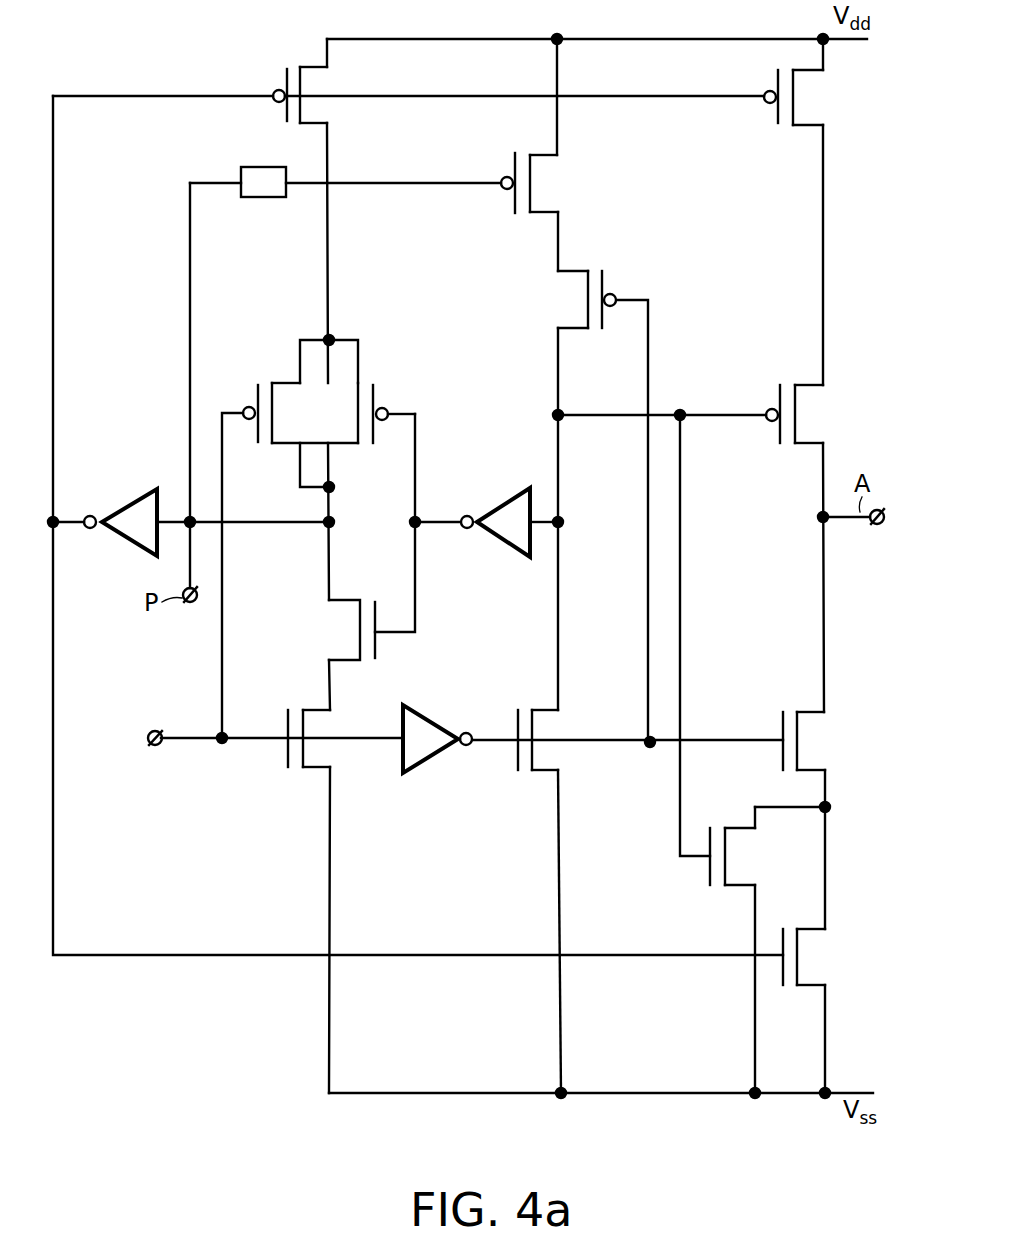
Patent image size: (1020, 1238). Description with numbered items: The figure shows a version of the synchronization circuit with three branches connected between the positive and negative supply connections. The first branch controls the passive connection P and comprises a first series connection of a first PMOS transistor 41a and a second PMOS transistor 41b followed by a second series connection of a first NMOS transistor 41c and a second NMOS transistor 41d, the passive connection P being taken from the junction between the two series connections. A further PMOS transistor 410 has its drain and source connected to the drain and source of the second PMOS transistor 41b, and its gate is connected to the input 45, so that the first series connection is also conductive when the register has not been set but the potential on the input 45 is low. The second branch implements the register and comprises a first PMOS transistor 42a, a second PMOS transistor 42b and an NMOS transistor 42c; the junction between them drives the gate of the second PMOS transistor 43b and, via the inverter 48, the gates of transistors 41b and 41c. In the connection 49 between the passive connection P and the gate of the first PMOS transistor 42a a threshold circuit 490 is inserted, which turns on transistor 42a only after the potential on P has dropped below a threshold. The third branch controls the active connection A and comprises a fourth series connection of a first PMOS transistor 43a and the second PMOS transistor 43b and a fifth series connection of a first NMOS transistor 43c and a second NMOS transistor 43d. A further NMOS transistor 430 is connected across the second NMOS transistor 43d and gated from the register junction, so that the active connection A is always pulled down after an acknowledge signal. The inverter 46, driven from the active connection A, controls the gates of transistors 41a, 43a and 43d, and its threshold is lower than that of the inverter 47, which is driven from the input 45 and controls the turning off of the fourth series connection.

The first PMOS transistor of the first series connection 41a is at (276, 88).
The second PMOS transistor of the first series connection 41b is at (353, 380).
The first NMOS transistor of the second series connection 41c is at (342, 632).
The second NMOS transistor of the second series connection 41d is at (303, 773).
The further PMOS transistor 410 is at (275, 380).
The first PMOS transistor of the third series connection 42a is at (559, 190).
The second PMOS transistor of the third series connection 42b is at (572, 298).
The NMOS transistor of the second branch 42c is at (536, 708).
The first PMOS transistor of the fourth series connection 43a is at (770, 103).
The second PMOS transistor of the fourth series connection 43b is at (798, 382).
The first NMOS transistor of the fifth series connection 43c is at (818, 746).
The second NMOS transistor of the fifth series connection 43d is at (817, 969).
The further NMOS transistor 430 is at (706, 880).
The input 45 is at (155, 745).
The inverter 46 is at (126, 500).
The inverter 47 is at (425, 772).
The inverter 48 is at (498, 503).
The connection 49 is at (392, 180).
The threshold circuit 490 is at (262, 200).